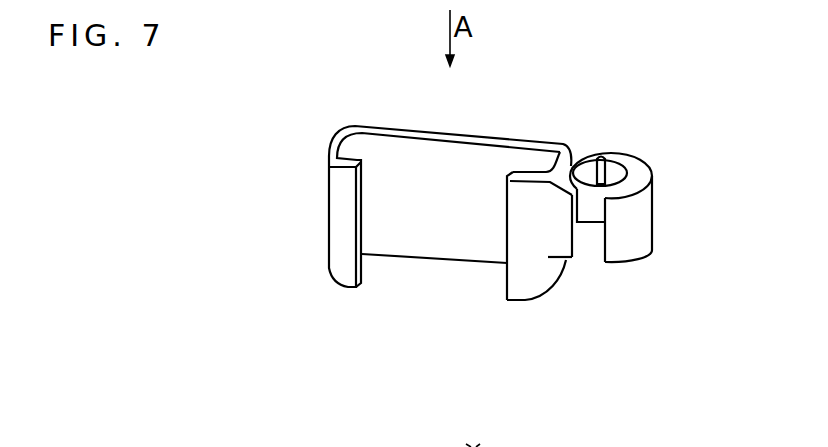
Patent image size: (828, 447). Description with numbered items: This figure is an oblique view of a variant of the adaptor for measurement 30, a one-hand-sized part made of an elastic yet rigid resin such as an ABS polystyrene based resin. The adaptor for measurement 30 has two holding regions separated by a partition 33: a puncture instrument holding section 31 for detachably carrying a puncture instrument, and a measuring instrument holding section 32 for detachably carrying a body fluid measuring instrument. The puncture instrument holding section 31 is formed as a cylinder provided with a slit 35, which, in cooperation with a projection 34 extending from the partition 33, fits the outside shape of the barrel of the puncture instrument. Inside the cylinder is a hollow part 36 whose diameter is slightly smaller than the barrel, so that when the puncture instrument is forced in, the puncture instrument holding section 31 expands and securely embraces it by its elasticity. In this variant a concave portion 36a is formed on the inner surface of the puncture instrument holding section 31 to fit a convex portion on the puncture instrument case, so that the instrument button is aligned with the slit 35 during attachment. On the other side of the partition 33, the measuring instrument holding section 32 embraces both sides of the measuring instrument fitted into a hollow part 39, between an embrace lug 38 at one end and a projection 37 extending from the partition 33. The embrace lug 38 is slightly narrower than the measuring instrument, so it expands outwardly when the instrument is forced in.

The adaptor for measurement 30 is at (596, 64).
The puncture instrument holding section 31 is at (645, 172).
The measuring instrument holding section 32 is at (391, 130).
The partition 33 is at (562, 164).
The projection 34 is at (560, 240).
The slit 35 is at (590, 243).
The hollow part 36 is at (590, 160).
The concave portion 36a is at (605, 155).
The projection 37 is at (520, 272).
The embrace lug 38 is at (338, 226).
The hollow part 39 is at (478, 177).